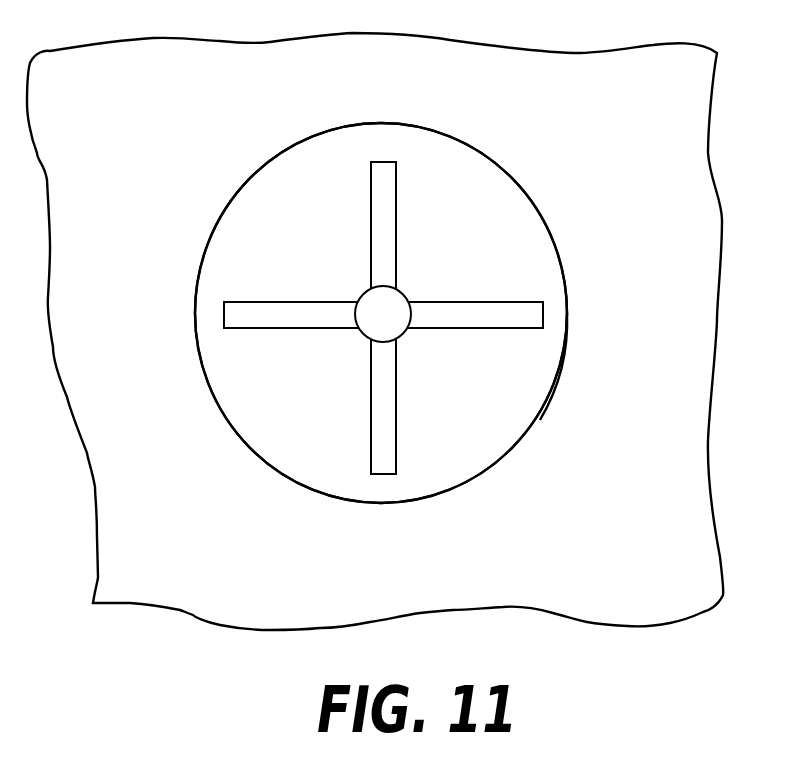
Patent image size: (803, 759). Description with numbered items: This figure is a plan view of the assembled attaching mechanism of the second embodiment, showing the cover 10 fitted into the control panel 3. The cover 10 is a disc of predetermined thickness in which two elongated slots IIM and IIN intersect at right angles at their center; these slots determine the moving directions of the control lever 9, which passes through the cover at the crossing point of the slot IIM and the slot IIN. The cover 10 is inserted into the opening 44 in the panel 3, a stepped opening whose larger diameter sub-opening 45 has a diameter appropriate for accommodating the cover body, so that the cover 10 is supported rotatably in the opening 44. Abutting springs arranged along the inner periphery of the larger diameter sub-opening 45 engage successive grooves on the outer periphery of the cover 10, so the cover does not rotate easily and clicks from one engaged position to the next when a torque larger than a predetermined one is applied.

The control panel 3 is at (688, 128).
The cover 10 is at (475, 165).
The opening 44 is at (588, 277).
The larger diameter sub-opening 45 is at (563, 354).
The control lever 9 is at (368, 327).
The elongated slot IIM is at (381, 161).
The elongated slot IIN is at (500, 318).